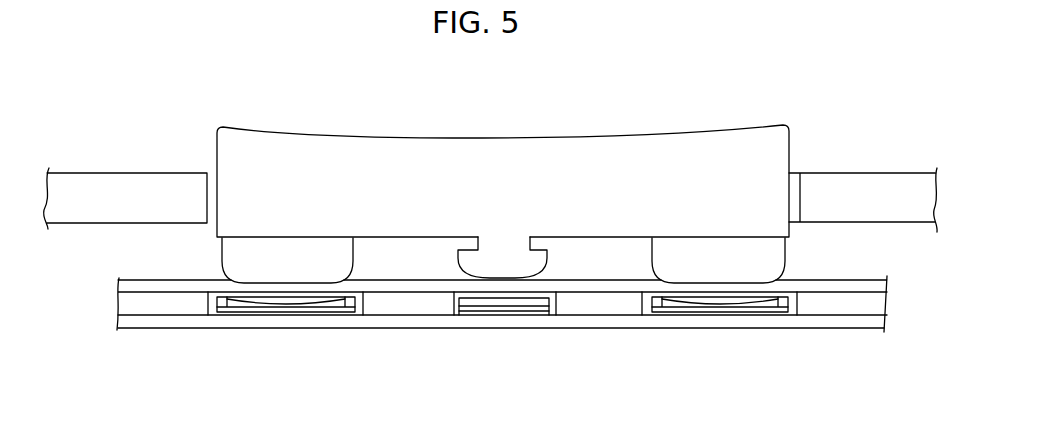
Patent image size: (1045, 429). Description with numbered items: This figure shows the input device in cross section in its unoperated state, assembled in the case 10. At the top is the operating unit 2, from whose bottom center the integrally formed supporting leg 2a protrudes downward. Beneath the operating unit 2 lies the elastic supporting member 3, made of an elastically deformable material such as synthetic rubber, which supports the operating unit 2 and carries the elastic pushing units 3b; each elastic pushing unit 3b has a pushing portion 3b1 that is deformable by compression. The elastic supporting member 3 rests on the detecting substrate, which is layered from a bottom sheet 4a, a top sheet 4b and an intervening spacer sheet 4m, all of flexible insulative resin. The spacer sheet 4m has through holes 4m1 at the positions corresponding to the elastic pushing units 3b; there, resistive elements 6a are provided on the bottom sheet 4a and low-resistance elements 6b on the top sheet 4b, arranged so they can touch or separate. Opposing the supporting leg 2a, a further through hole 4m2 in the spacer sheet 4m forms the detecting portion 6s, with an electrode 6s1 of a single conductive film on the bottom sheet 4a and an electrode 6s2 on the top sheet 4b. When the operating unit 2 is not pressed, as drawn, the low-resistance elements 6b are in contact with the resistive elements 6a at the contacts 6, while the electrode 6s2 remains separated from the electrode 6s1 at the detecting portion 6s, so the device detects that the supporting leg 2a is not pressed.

The operating unit 2 is at (528, 179).
The supporting leg 2a is at (537, 265).
The elastic supporting member 3 is at (528, 267).
The elastic pushing unit 3b is at (222, 255).
The pushing portion 3b1 is at (353, 262).
The bottom sheet 4a is at (118, 320).
The top sheet 4b is at (118, 285).
The spacer sheet 4m is at (130, 307).
The through hole 4m1 is at (208, 303).
The through hole 4m2 is at (455, 299).
The contact 6 is at (503, 360).
The resistive element 6a is at (232, 312).
The low-resistance element 6b is at (347, 305).
The detecting portion 6s is at (533, 358).
The electrode 6s1 is at (481, 300).
The electrode 6s2 is at (528, 300).
The case 10 is at (888, 193).